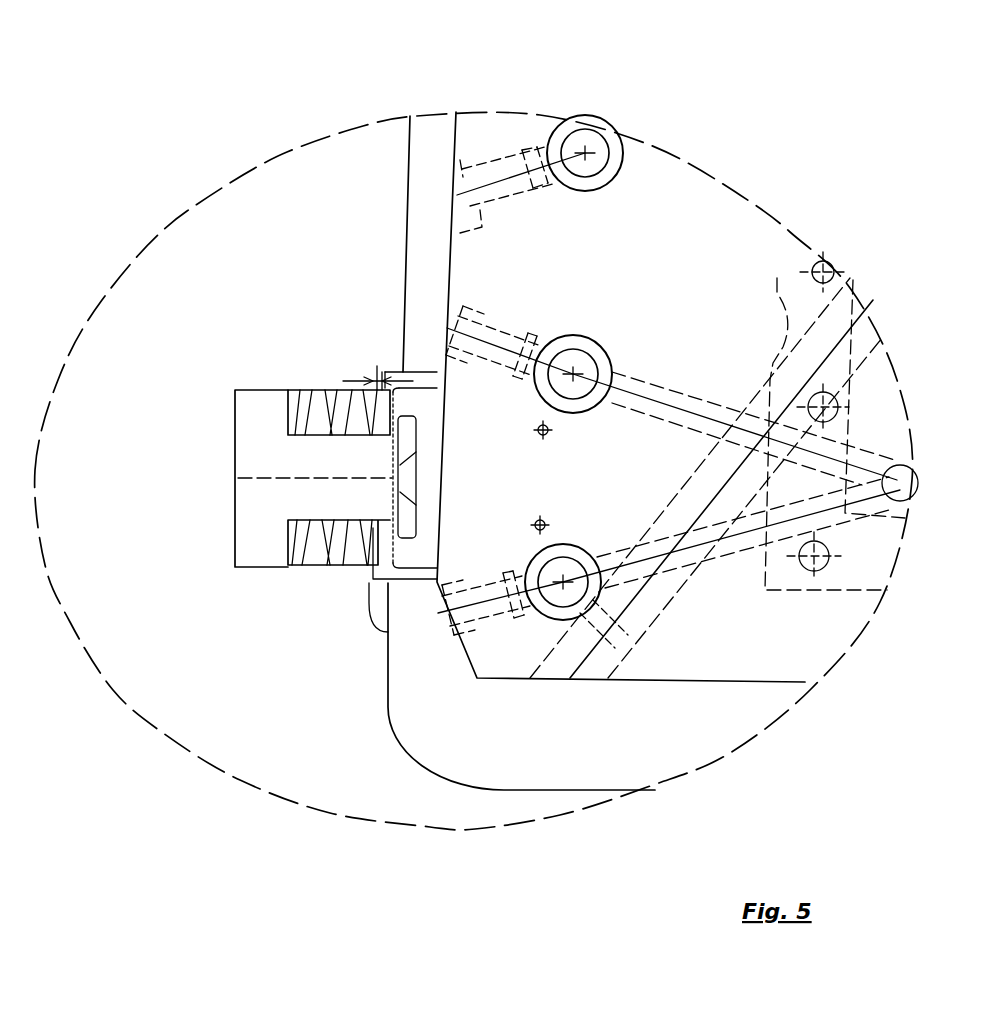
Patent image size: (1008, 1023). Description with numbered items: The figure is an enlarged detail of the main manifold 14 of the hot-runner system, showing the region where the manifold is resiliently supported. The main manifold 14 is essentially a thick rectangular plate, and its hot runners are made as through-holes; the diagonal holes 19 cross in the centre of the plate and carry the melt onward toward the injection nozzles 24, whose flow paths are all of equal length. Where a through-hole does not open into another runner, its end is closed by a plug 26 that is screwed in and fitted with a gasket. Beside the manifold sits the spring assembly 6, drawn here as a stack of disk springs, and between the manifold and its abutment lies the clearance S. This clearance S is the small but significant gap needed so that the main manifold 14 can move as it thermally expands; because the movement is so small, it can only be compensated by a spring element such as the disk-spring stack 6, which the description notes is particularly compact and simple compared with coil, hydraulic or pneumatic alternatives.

The clearance S is at (377, 381).
The spring assembly 6 is at (319, 555).
The main manifold 14 is at (465, 656).
The diagonal holes 19 is at (660, 593).
The injection nozzles 24 is at (552, 605).
The plugs 26 is at (612, 667).